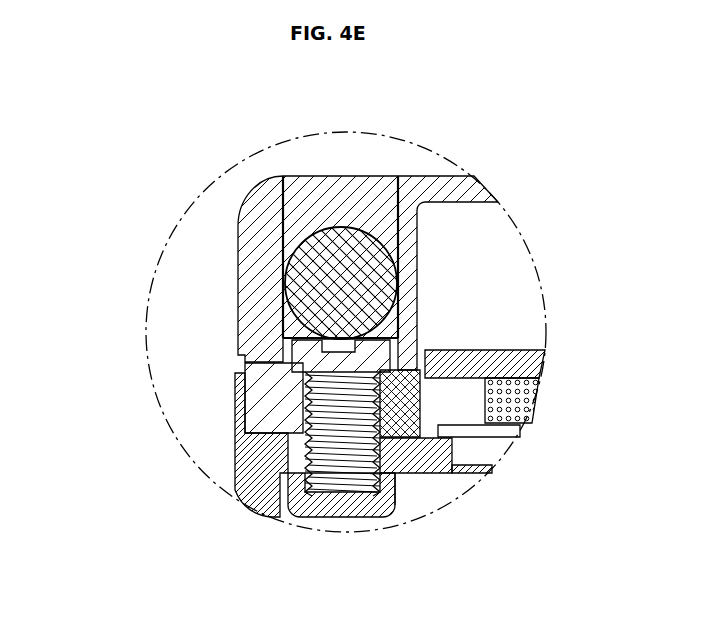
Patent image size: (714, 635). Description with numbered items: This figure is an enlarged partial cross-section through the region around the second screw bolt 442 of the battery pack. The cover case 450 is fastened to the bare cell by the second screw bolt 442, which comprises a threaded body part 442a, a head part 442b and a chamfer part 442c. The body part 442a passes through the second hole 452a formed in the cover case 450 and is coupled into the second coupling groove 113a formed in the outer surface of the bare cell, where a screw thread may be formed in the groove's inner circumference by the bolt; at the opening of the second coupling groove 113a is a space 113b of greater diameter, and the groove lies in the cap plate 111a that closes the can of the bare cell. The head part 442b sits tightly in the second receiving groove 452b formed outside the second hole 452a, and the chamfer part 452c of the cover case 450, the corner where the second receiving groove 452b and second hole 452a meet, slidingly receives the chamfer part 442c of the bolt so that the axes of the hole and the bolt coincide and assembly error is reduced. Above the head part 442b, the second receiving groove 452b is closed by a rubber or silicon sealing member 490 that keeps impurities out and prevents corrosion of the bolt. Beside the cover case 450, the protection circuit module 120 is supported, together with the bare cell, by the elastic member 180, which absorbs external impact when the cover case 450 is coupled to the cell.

The cover case 450 is at (263, 205).
The sealing member 490 is at (340, 232).
The second screw bolt 442 is at (211, 342).
The body part 442a is at (300, 393).
The head part 442b is at (292, 342).
The chamfer part 442c is at (292, 366).
The protection circuit module 120 is at (503, 343).
The elastic member 180 is at (532, 395).
The second hole 452a is at (400, 436).
The second receiving groove 452b is at (385, 397).
The chamfer part 452c is at (455, 454).
The second coupling groove 113a is at (327, 498).
The space 113b is at (284, 518).
The cap plate 111a is at (394, 505).